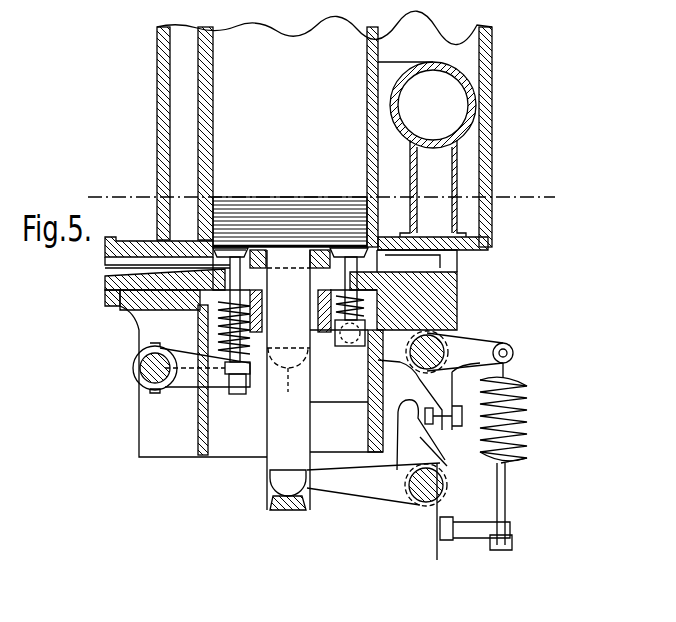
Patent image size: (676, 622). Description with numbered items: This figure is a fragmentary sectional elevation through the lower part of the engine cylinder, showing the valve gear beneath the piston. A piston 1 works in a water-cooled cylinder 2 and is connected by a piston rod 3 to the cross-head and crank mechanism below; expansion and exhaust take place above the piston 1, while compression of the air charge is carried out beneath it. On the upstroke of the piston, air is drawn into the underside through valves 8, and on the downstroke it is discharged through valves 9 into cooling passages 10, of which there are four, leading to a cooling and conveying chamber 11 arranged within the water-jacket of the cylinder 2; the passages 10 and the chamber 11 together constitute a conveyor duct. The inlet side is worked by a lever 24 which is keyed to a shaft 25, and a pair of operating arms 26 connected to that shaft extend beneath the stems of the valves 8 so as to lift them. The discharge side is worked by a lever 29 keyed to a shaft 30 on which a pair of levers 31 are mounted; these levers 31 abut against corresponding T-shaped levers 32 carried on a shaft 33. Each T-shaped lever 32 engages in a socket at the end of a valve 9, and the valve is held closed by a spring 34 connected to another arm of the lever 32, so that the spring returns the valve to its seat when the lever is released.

The piston 1 is at (231, 258).
The cylinder 2 is at (200, 94).
The piston rod 3 is at (272, 457).
The valves 8 is at (238, 250).
The valves 9 is at (348, 255).
The cooling passages 10 is at (442, 220).
The cooling and conveying chamber 11 is at (462, 113).
The lever 24 is at (288, 388).
The shaft 25 is at (142, 380).
The operating arms 26 is at (190, 387).
The lever 29 is at (344, 490).
The shaft 30 is at (417, 507).
The levers 31 is at (442, 452).
The T-shaped levers 32 is at (458, 352).
The shaft 33 is at (445, 338).
The spring 34 is at (527, 434).